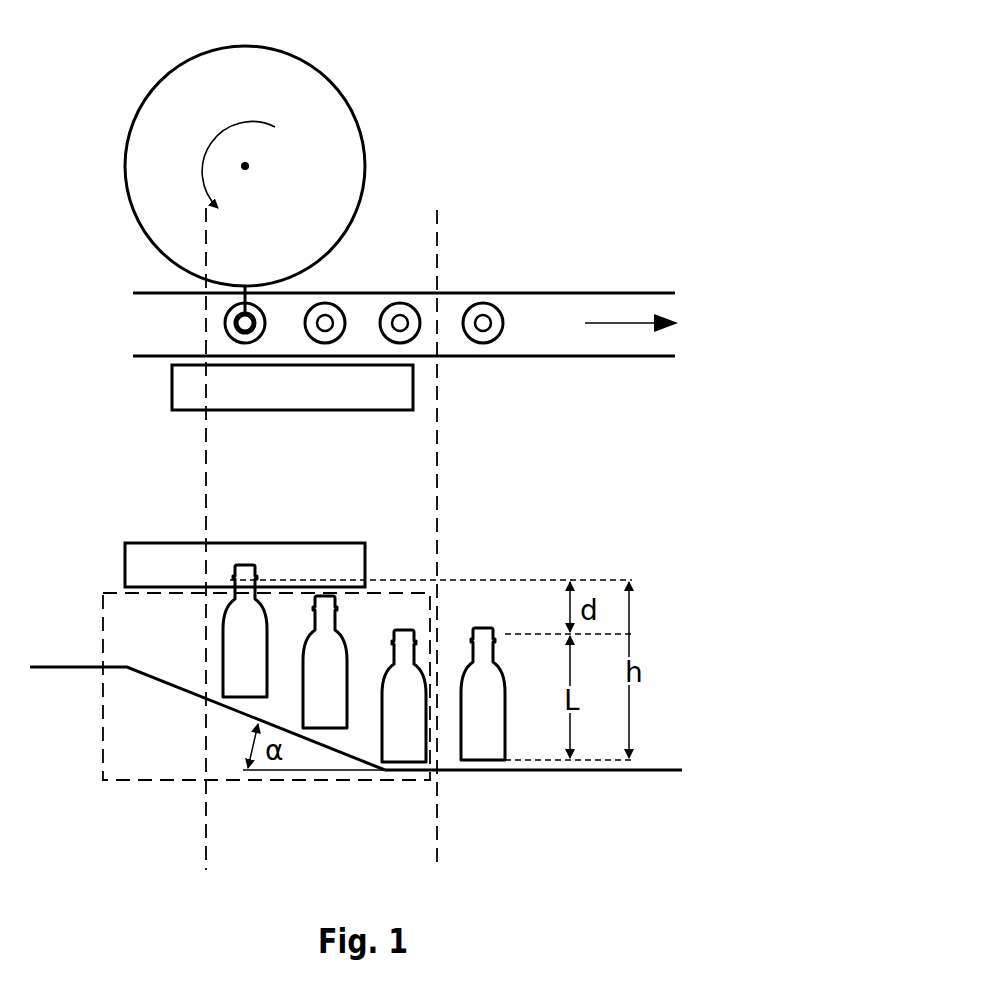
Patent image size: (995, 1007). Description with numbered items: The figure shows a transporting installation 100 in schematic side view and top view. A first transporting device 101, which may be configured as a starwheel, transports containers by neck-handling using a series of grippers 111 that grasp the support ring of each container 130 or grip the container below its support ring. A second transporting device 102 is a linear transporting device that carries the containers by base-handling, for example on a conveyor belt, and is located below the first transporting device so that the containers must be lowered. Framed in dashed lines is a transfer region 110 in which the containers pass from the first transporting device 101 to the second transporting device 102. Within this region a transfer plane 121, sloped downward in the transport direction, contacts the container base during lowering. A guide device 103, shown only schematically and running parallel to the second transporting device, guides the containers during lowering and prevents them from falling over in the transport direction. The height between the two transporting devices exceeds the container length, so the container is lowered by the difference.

The transporting installation 100 is at (652, 64).
The first transporting device 101 is at (299, 75).
The second transporting device 102 is at (625, 347).
The guide device 103 is at (353, 403).
The transfer region 110 is at (437, 213).
The grippers 111 is at (228, 325).
The transfer plane 121 is at (335, 757).
The container 130 is at (483, 303).